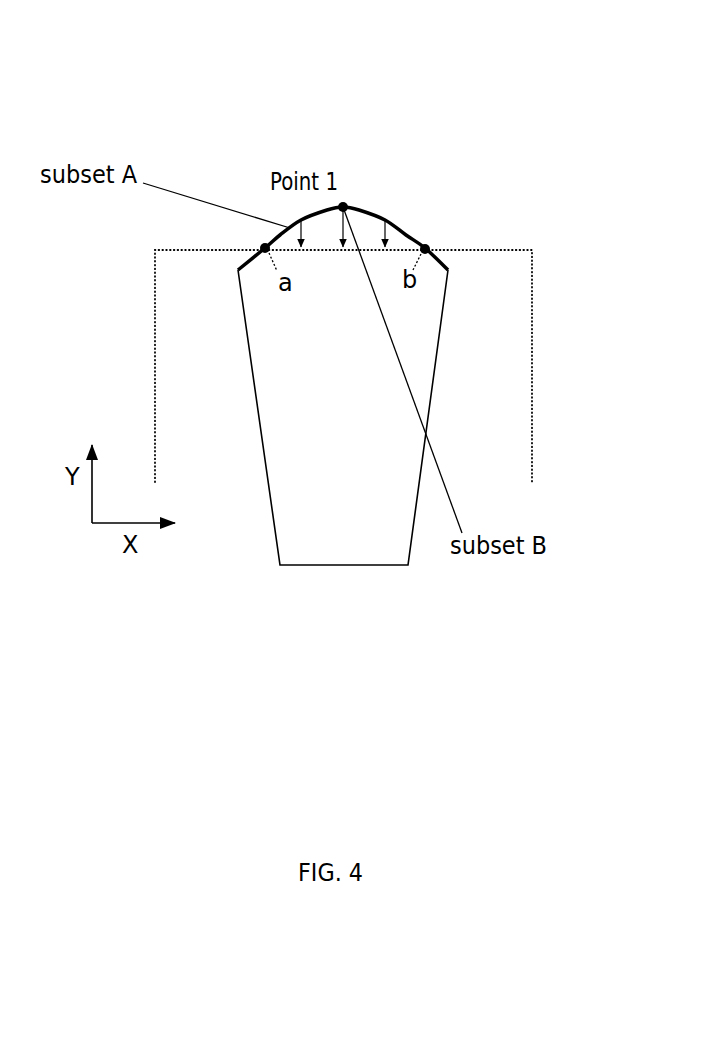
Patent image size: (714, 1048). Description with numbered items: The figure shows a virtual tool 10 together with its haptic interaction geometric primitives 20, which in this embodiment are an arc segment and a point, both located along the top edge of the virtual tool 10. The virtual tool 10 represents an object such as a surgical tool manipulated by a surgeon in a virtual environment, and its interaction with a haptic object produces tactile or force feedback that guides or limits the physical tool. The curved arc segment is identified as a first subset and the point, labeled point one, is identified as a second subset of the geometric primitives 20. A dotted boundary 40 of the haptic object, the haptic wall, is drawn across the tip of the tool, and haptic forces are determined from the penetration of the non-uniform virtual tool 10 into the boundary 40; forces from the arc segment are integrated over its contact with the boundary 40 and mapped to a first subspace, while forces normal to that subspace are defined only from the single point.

The virtual tool 10 is at (251, 589).
The haptic interaction geometric primitives 20 is at (343, 205).
The boundary of haptic object 40 is at (531, 333).